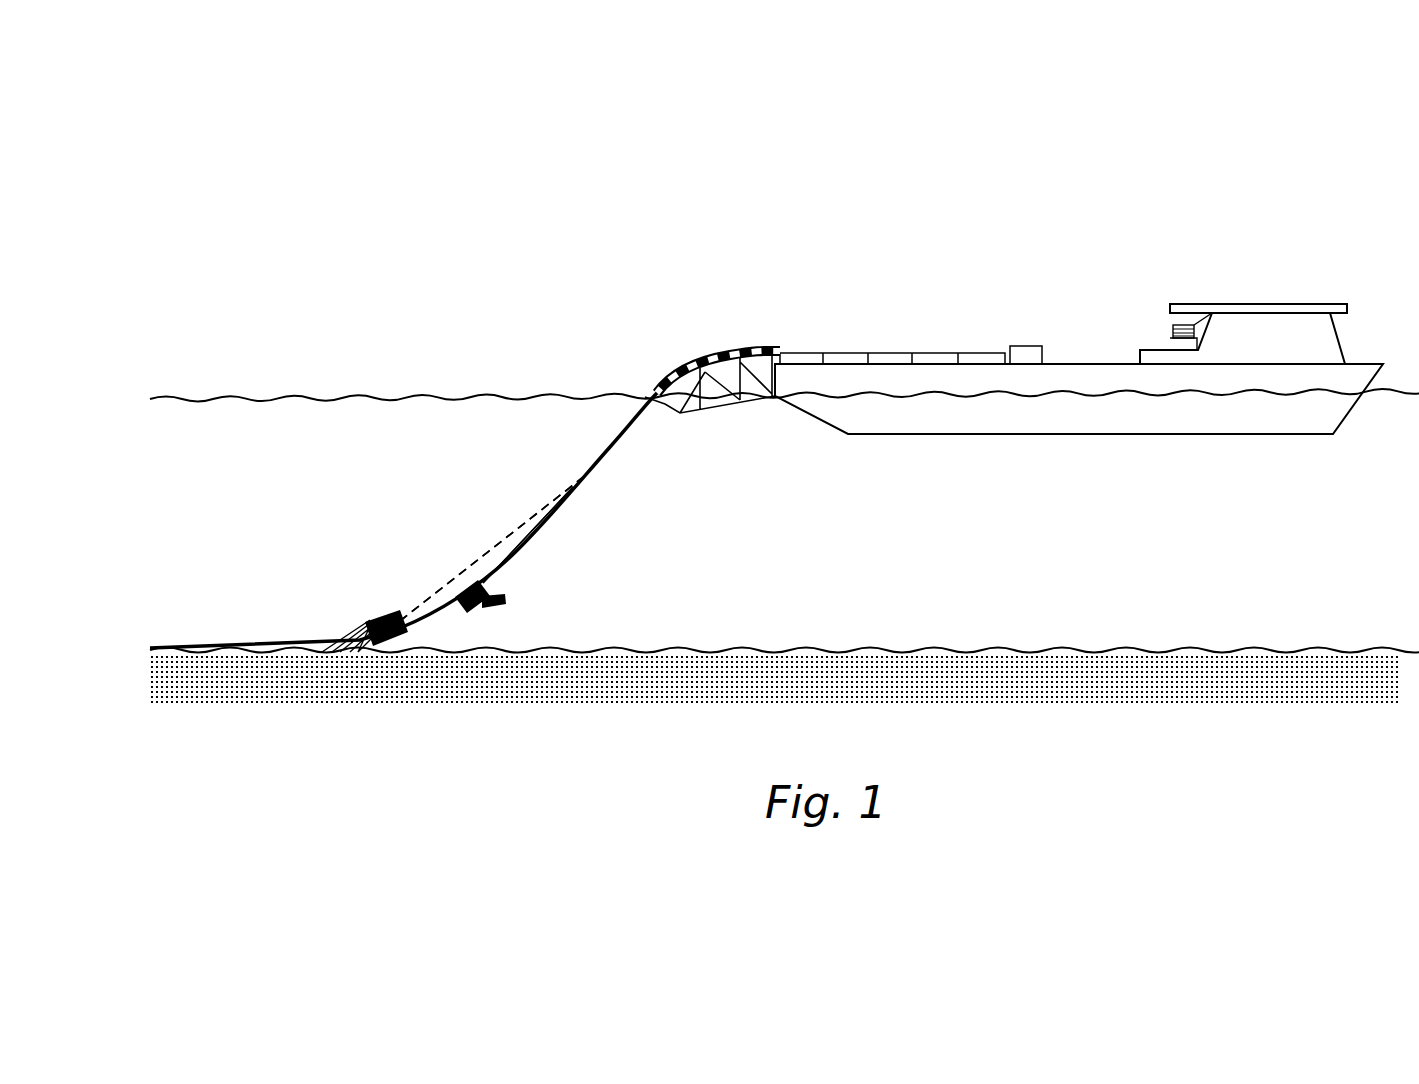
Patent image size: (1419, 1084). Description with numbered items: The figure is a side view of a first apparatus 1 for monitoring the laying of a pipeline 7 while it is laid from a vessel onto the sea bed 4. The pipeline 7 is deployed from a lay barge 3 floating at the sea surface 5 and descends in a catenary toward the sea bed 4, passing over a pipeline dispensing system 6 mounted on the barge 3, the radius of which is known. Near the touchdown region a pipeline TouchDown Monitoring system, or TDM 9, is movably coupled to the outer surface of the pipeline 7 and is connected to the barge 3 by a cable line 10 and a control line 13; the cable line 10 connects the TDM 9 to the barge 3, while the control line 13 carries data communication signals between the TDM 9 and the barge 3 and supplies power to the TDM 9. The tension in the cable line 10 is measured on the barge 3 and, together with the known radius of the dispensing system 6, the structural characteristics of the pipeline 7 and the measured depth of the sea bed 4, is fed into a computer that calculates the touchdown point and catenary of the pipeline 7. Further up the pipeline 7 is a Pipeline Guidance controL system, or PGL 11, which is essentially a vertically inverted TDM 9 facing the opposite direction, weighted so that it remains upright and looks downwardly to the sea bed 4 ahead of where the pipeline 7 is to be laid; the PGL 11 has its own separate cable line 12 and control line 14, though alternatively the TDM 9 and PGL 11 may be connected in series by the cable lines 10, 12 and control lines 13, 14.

The apparatus 1 is at (742, 562).
The lay barge 3 is at (1184, 412).
The sea bed 4 is at (890, 647).
The sea surface 5 is at (438, 395).
The pipeline dispensing system 6 is at (700, 385).
The pipeline 7 is at (522, 572).
The pipeline TouchDown Monitoring system (TDM) 9 is at (376, 613).
The cable line 10 is at (482, 556).
The Pipeline Guidance controL system (PGL) 11 is at (510, 605).
The cable line 12 is at (533, 535).
The control line 13 is at (491, 549).
The control line 14 is at (528, 535).